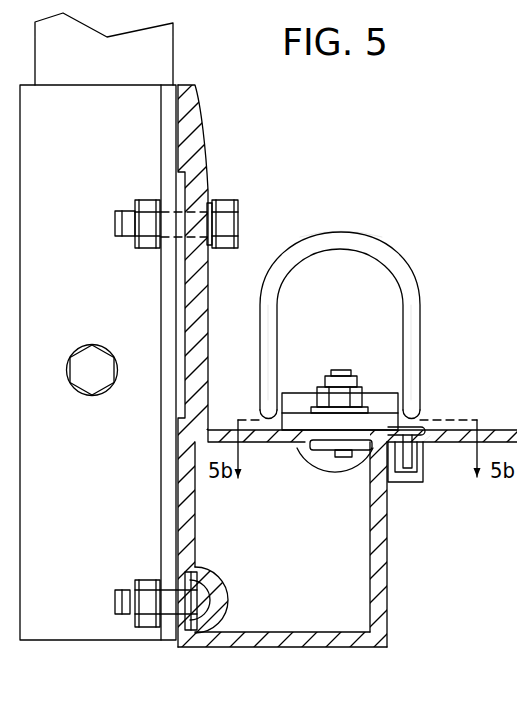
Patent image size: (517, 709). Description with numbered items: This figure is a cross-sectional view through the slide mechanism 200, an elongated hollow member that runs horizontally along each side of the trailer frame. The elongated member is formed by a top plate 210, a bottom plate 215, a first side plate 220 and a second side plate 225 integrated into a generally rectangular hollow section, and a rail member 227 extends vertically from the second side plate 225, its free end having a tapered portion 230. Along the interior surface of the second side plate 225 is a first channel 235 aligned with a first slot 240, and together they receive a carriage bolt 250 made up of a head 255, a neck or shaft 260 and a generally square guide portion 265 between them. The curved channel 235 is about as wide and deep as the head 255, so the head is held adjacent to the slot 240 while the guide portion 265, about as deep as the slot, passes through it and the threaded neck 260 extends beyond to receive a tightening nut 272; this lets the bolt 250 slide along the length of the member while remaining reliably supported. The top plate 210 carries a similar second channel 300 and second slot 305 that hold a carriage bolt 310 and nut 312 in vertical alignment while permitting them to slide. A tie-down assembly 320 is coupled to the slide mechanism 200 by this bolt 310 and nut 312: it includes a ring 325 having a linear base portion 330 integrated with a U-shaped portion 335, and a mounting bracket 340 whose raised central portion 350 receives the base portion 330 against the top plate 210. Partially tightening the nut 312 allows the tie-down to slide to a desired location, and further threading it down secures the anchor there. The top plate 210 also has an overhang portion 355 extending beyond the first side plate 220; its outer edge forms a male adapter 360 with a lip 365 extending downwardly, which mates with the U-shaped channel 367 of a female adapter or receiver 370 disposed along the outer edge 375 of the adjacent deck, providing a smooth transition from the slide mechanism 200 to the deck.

The slide mechanism 200 is at (258, 354).
The top plate 210 is at (226, 430).
The bottom plate 215 is at (286, 638).
The first side plate 220 is at (380, 603).
The second side plate 225 is at (191, 503).
The rail member 227 is at (197, 290).
The tapered portion 230 is at (208, 110).
The first channel 235 is at (218, 595).
The first slot 240 is at (176, 628).
The carriage bolt 250 is at (155, 608).
The head 255 is at (200, 582).
The neck or shaft 260 is at (118, 601).
The guide portion 265 is at (185, 592).
The tightening nut 272 is at (146, 606).
The second channel 300 is at (319, 429).
The second slot 305 is at (368, 396).
The carriage bolt 310 is at (318, 452).
The nut 312 is at (349, 427).
The tie-down assembly 320 is at (360, 325).
The ring 325 is at (419, 272).
The base portion 330 is at (268, 400).
The U-shaped portion 335 is at (336, 237).
The mounting bracket 340 is at (305, 400).
The raised central portion 350 is at (392, 397).
The overhang portion 355 is at (406, 430).
The male adapter 360 is at (433, 424).
The lip 365 is at (390, 428).
The U-shaped channel 367 is at (373, 463).
The female adapter or receiver 370 is at (411, 497).
The outer edge 375 is at (424, 475).